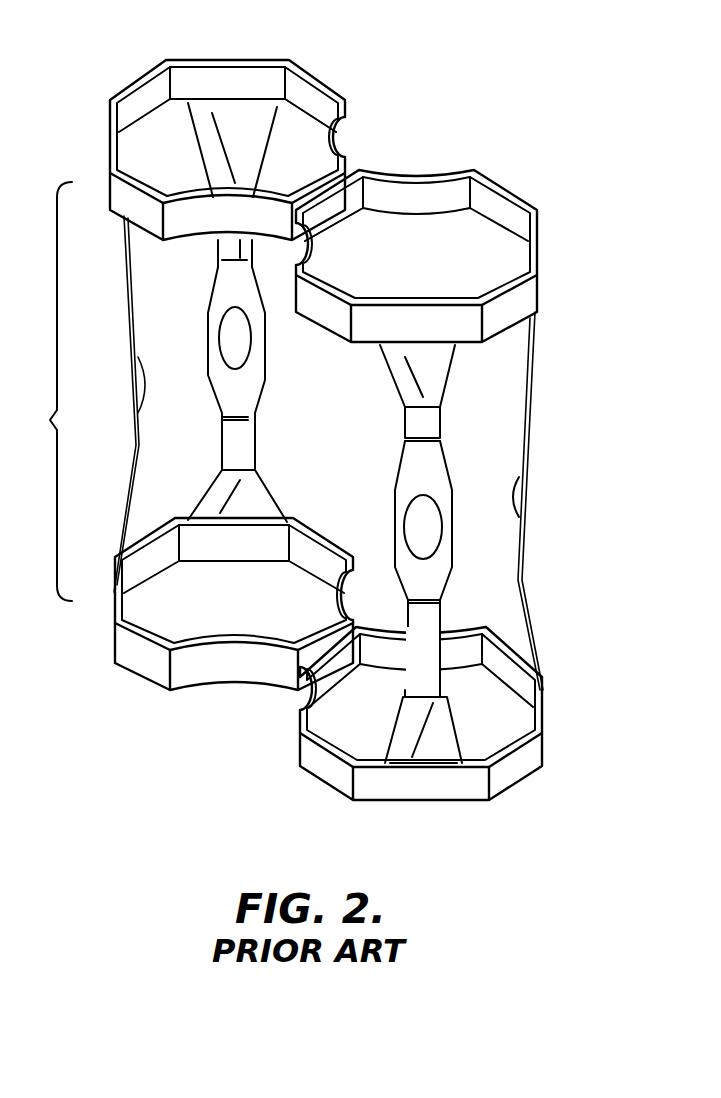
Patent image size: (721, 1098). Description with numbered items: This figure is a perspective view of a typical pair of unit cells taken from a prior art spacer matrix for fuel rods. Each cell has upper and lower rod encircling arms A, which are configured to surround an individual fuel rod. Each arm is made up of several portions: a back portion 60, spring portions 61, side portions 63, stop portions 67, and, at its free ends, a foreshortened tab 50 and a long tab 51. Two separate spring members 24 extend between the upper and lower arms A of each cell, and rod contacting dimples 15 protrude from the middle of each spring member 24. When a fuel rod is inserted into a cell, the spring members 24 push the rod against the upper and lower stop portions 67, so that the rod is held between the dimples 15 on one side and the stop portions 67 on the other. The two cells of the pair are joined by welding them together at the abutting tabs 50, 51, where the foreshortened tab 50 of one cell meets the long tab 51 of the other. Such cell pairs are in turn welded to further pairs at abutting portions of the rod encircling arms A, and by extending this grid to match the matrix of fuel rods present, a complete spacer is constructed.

The rod contacting dimple 15 is at (235, 337).
The spring member 24 is at (57, 420).
The foreshortened tab 50 is at (307, 187).
The long tab 51 is at (329, 167).
The back portion 60 is at (329, 431).
The spring portion 61 is at (237, 60).
The side portion 63 is at (323, 82).
The stop portion 67 is at (300, 247).
The rod encircling arm A is at (310, 70).